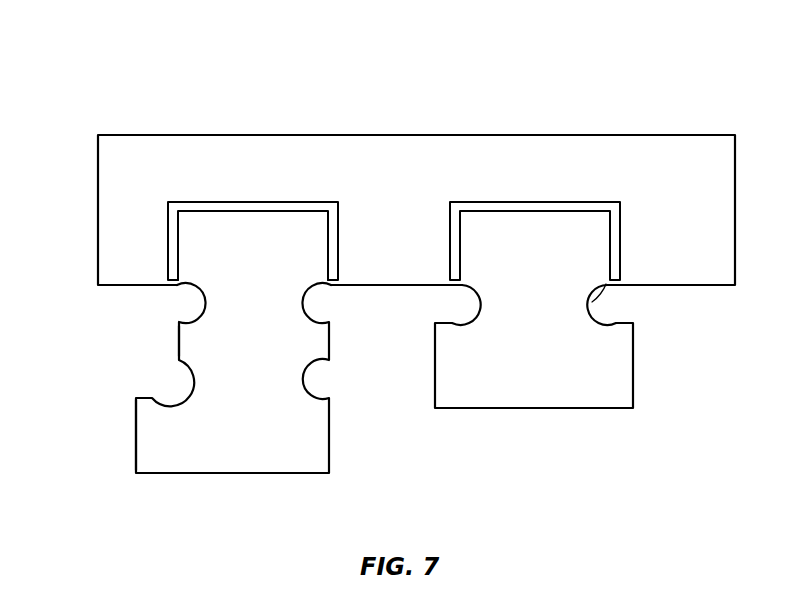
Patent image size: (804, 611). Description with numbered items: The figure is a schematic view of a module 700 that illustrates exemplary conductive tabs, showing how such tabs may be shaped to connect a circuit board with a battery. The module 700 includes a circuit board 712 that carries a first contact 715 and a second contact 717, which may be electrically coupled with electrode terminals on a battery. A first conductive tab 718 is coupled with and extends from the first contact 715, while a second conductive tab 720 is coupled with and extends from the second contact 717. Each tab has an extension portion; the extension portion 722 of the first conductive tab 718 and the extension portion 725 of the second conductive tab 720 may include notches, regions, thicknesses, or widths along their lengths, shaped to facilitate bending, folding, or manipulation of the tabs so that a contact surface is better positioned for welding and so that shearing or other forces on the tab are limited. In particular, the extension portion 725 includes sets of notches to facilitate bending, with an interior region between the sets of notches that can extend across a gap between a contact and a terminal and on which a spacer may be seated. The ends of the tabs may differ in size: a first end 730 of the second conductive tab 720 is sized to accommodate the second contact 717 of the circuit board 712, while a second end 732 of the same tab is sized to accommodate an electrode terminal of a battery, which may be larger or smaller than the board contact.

The module 700 is at (166, 72).
The circuit board 712 is at (400, 136).
The first contact 715 is at (585, 203).
The second contact 717 is at (255, 203).
The first conductive tab 718 is at (634, 385).
The second conductive tab 720 is at (330, 455).
The extension portion 722 is at (606, 284).
The extension portion 725 is at (178, 352).
The first end 730 is at (330, 248).
The second end 732 is at (136, 455).